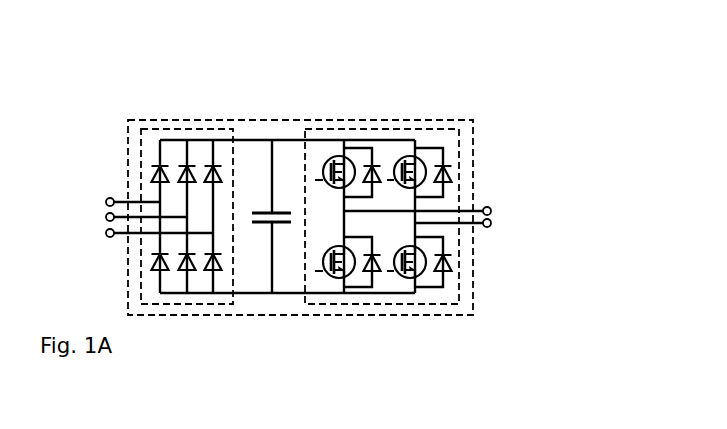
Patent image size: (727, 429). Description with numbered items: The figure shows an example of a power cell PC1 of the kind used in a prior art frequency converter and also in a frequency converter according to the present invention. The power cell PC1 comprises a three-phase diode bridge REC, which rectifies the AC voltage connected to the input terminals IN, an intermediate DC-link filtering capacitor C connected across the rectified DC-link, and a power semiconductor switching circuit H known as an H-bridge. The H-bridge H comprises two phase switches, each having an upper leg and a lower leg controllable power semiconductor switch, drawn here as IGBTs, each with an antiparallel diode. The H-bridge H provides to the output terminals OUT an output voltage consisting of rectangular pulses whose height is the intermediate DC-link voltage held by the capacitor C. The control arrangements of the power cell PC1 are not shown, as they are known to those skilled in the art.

The power cell PC1 is at (503, 101).
The three-phase diode bridge REC is at (204, 128).
The power semiconductor switching circuit H is at (381, 124).
The intermediate DC-link filtering capacitor C is at (270, 216).
The input terminals IN is at (144, 217).
The output terminals OUT is at (446, 215).